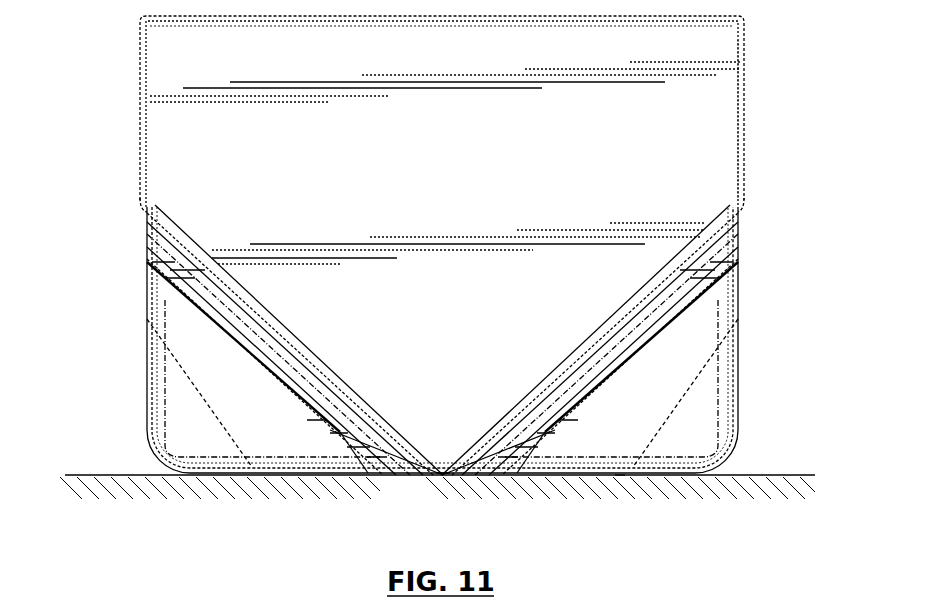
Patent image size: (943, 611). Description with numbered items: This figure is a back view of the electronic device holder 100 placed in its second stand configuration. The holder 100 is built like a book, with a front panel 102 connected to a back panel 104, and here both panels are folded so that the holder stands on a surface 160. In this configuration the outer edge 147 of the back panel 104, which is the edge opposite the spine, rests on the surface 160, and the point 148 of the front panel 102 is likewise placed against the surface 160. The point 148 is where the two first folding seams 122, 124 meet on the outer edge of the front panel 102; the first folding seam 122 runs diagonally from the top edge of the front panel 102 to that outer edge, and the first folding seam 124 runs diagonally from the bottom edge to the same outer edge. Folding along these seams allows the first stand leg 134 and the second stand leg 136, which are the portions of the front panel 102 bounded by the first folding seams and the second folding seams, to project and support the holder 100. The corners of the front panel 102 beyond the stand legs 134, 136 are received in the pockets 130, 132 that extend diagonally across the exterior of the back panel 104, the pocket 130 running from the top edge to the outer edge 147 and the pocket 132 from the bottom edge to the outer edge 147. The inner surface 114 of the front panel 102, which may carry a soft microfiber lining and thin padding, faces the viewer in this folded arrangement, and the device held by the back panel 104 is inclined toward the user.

The electronic device holder 100 is at (449, 285).
The front panel 102 is at (449, 140).
The back panel 104 is at (429, 382).
The inner surface of front panel 114 is at (702, 152).
The first folding seam 122 is at (712, 236).
The first folding seam 124 is at (173, 242).
The pocket 130 is at (655, 405).
The pocket 132 is at (217, 380).
The first stand leg 134 is at (627, 327).
The second stand leg 136 is at (330, 418).
The outer edge of back panel 147 is at (620, 478).
The point 148 is at (445, 478).
The surface 160 is at (421, 504).